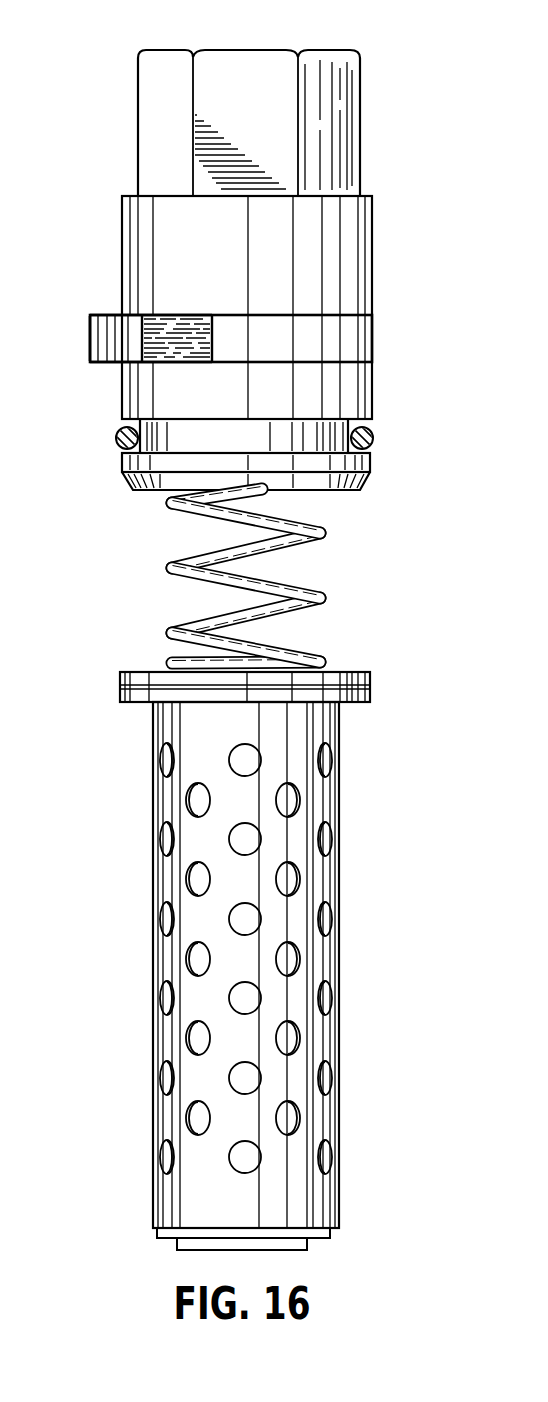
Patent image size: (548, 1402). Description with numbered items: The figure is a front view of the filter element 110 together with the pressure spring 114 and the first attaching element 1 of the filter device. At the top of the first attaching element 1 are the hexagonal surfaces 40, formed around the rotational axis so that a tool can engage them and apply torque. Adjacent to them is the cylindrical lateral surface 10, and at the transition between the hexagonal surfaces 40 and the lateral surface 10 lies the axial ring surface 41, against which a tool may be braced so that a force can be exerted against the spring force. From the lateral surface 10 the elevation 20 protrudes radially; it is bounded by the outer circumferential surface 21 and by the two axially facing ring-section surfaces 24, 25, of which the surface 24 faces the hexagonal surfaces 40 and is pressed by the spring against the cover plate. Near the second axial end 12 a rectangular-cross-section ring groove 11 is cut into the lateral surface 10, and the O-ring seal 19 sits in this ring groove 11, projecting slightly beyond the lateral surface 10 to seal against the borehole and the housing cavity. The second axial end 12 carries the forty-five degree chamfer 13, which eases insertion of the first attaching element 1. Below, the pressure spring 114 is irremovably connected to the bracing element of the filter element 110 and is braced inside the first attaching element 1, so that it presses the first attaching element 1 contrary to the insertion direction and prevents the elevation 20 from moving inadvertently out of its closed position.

The first attaching element 1 is at (104, 66).
The hexagonal surfaces 40 is at (153, 128).
The axial ring surface 41 is at (123, 194).
The cylindrical lateral surface 10 is at (226, 290).
The elevation 20 is at (88, 314).
The ring section surface 24 is at (112, 313).
The outer circumferential surface 21 is at (102, 340).
The ring section surface 25 is at (101, 364).
The ring groove 11 is at (323, 430).
The O-ring seal 19 is at (374, 442).
The chamfer 13 is at (269, 494).
The second axial end 12 is at (340, 491).
The pressure spring 114 is at (322, 600).
The filter element 110 is at (318, 1040).